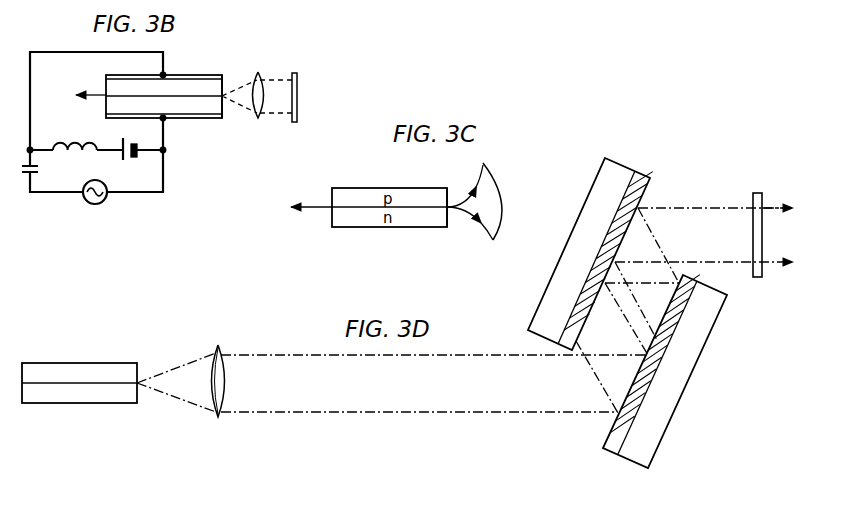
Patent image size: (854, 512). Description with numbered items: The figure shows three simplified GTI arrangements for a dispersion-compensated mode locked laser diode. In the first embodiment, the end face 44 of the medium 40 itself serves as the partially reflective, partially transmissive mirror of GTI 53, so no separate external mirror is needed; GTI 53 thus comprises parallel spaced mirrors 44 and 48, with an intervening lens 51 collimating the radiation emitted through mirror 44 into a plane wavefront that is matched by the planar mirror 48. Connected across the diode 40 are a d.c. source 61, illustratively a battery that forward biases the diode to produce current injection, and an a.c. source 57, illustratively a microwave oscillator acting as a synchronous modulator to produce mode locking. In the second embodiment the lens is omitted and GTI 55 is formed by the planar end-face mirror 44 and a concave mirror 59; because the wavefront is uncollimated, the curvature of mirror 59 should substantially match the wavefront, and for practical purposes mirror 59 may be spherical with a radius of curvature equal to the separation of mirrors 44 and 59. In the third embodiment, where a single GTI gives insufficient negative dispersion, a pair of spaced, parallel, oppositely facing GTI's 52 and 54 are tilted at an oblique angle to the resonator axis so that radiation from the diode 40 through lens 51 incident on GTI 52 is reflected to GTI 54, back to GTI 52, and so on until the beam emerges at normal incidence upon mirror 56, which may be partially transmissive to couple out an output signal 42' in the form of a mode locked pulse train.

In FIG. 3B, the medium 40 is at (183, 75).
In FIG. 3D, the medium 40 is at (92, 362).
In FIG. 3B, the end face 44 is at (223, 80).
In FIG. 3C, the end face 44 is at (447, 193).
In FIG. 3B, the planar mirror 48 is at (298, 92).
In FIG. 3B, the lens 51 is at (259, 72).
In FIG. 3D, the lens 51 is at (219, 417).
In FIG. 3D, the GTI 52 is at (680, 388).
In FIG. 3B, the GTI 53 is at (276, 97).
In FIG. 3D, the GTI 54 is at (616, 172).
In FIG. 3C, the GTI 55 is at (486, 211).
In FIG. 3D, the mirror 56 is at (755, 240).
In FIG. 3B, the a.c. source 57 is at (95, 204).
In FIG. 3C, the concave mirror 59 is at (499, 177).
In FIG. 3B, the d.c. source 61 is at (125, 160).
In FIG. 3D, the output signal 42' is at (775, 256).